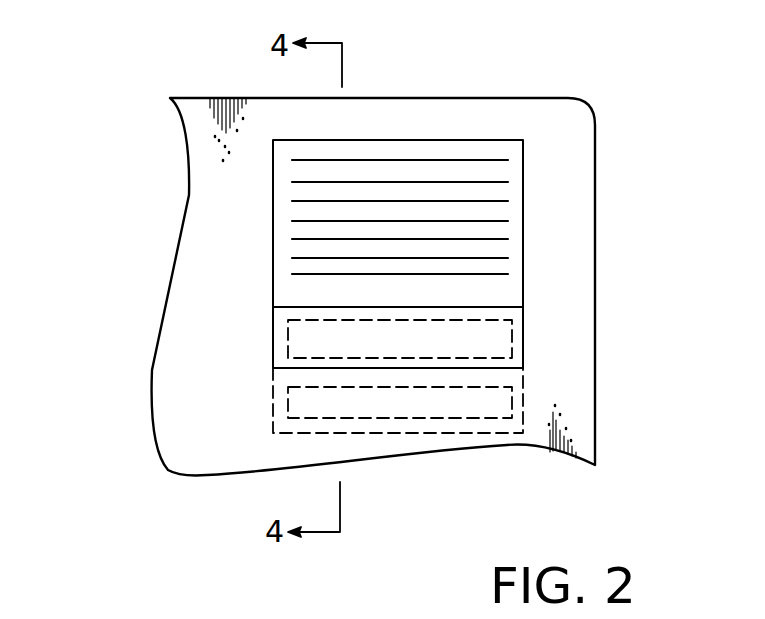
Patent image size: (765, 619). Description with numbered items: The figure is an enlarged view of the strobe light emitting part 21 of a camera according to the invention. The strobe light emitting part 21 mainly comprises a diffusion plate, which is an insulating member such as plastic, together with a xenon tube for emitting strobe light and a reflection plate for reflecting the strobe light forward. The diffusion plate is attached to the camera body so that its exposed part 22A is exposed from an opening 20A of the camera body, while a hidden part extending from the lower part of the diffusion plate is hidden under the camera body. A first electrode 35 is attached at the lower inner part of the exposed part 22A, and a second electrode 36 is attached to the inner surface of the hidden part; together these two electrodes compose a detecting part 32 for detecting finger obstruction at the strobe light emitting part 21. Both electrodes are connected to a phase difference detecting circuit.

The opening 20A is at (273, 283).
The strobe light emitting part 21 is at (253, 220).
The exposed part 22A is at (490, 148).
The detecting part 32 is at (247, 358).
The first electrode 35 is at (512, 335).
The second electrode 36 is at (512, 402).